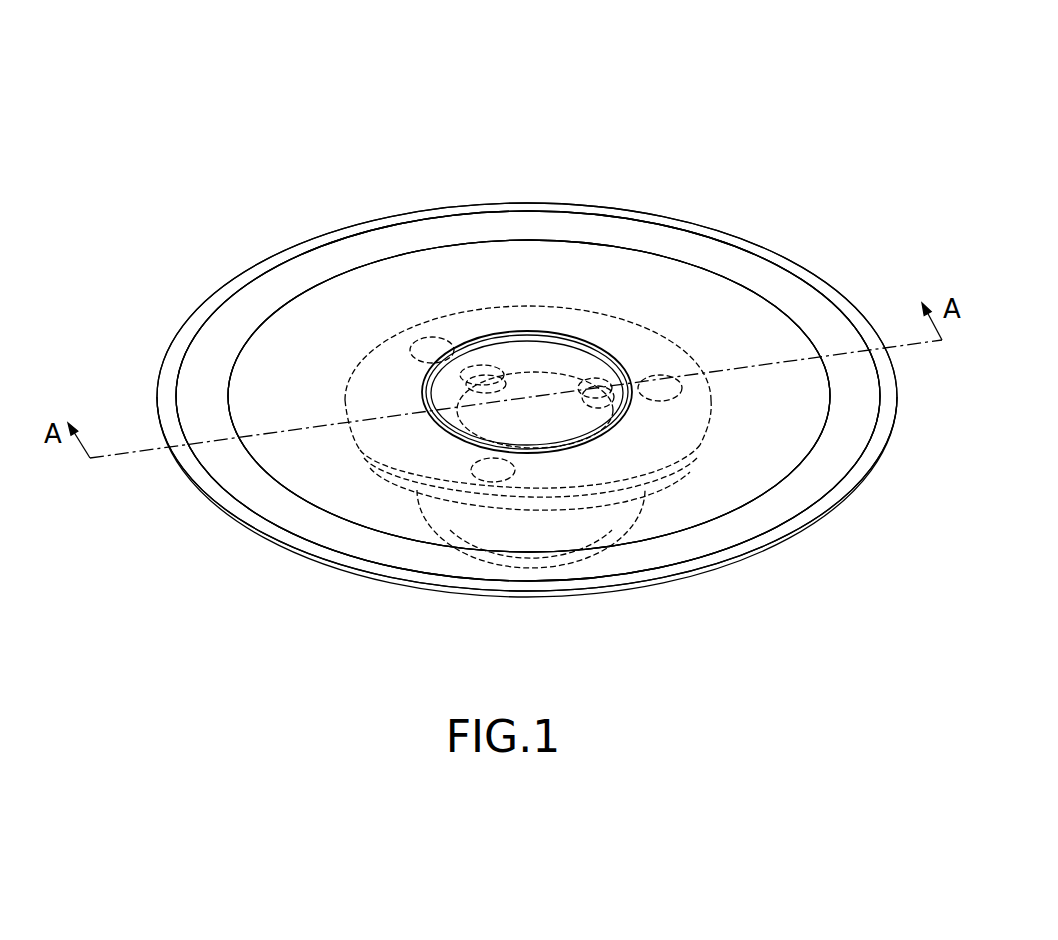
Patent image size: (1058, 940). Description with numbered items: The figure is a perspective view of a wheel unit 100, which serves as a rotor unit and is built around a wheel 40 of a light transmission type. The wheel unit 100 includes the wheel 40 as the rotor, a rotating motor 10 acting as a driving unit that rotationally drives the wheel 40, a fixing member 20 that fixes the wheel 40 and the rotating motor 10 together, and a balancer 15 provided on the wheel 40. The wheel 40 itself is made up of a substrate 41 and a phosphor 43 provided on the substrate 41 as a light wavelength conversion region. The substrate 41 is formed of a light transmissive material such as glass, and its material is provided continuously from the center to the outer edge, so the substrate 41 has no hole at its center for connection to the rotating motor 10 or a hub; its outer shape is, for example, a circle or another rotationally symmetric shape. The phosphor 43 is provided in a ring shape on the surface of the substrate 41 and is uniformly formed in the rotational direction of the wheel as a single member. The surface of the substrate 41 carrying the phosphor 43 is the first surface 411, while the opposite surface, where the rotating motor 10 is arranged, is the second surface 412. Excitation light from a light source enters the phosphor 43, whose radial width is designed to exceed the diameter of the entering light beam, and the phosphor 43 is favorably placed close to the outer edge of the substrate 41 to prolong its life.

The wheel unit 100 is at (490, 148).
The rotating motor 10 is at (593, 540).
The balancer 15 is at (500, 358).
The fixing member 20 is at (662, 476).
The wheel 40 is at (767, 254).
The substrate 41 is at (553, 282).
The first surface 411 is at (430, 260).
The second surface 412 is at (315, 490).
The phosphor 43 is at (623, 237).